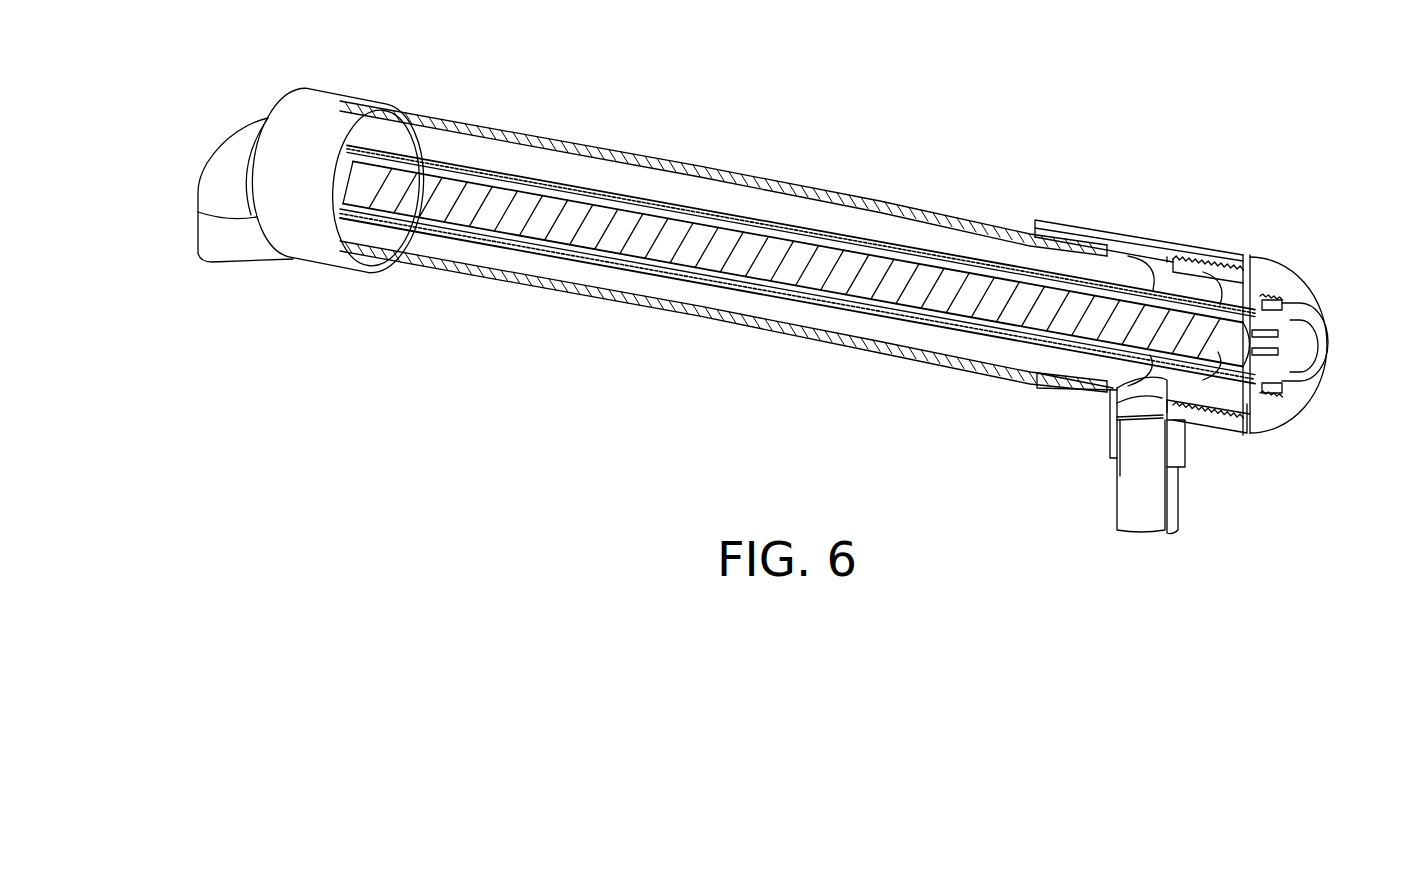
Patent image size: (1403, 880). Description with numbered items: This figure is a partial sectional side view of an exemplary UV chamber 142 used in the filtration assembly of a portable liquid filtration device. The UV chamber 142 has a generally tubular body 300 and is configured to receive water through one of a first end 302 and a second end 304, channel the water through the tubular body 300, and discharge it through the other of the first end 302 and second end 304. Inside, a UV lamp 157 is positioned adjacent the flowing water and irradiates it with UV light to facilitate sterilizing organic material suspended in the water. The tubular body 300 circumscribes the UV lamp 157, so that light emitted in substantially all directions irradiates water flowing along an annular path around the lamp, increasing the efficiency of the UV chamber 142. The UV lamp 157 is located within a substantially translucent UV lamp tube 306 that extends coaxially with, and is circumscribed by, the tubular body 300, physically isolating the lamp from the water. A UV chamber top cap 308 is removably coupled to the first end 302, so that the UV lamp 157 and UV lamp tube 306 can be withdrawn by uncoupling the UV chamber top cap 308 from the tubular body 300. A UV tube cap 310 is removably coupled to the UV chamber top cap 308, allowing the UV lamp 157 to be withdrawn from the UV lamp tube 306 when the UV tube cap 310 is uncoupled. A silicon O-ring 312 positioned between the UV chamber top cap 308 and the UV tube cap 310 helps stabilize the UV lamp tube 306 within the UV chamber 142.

The UV chamber 142 is at (968, 88).
The tubular body 300 is at (607, 153).
The first end 302 is at (1187, 438).
The second end 304 is at (223, 243).
The UV lamp tube 306 is at (748, 217).
The UV chamber top cap 308 is at (1253, 276).
The UV tube cap 310 is at (1287, 298).
The silicon O-ring 312 is at (1297, 398).
The UV lamp 157 is at (657, 252).